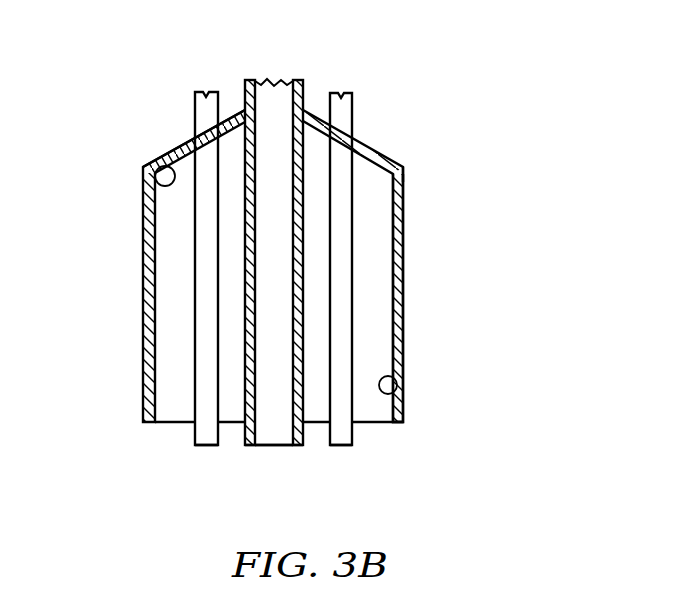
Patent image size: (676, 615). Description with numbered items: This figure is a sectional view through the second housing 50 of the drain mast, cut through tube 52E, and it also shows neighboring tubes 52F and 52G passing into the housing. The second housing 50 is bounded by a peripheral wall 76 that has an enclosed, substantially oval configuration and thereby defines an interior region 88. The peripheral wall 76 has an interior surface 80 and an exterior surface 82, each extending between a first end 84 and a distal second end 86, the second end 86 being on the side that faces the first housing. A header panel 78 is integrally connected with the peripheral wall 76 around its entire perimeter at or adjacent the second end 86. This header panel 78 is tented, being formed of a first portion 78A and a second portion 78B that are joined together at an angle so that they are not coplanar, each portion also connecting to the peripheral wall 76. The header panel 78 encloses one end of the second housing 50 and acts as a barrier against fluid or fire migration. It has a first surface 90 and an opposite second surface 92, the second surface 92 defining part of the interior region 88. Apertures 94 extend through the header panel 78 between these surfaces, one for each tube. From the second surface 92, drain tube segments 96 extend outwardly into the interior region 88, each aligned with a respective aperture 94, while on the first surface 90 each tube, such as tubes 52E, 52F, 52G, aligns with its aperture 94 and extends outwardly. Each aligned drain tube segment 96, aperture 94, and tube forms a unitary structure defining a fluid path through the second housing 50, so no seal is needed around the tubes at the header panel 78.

The second housing 50 is at (312, 260).
The tube 52E is at (287, 224).
The tube 52F is at (207, 92).
The tube 52G is at (341, 93).
The peripheral wall 76 is at (297, 273).
The header panel 78 is at (285, 241).
The first portion 78A is at (363, 143).
The second portion 78B is at (164, 144).
The interior surface 80 is at (397, 385).
The exterior surface 82 is at (405, 345).
The first end 84 is at (400, 422).
The second end 86 is at (403, 170).
The interior region 88 is at (389, 270).
The first surface 90 is at (182, 145).
The second surface 92 is at (155, 177).
The aperture 94 is at (281, 107).
The drain tube segment 96 is at (207, 445).